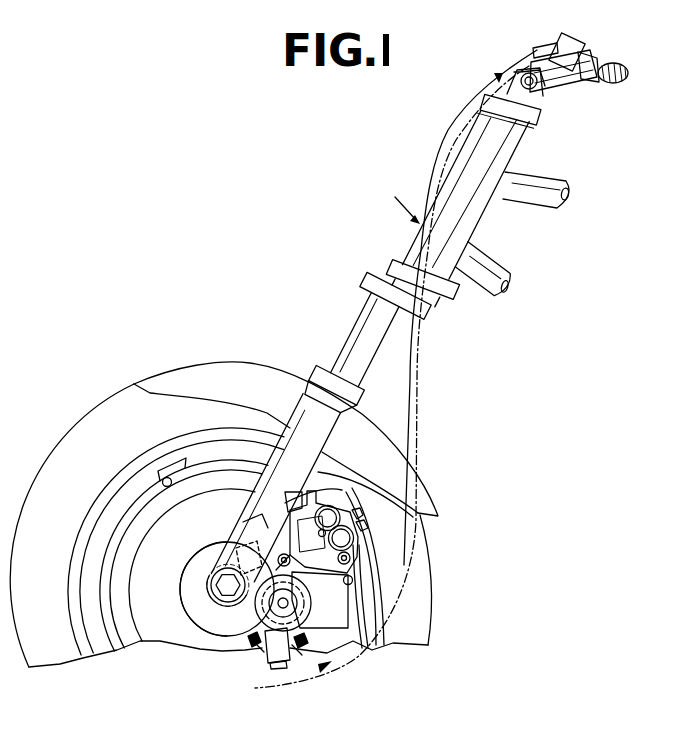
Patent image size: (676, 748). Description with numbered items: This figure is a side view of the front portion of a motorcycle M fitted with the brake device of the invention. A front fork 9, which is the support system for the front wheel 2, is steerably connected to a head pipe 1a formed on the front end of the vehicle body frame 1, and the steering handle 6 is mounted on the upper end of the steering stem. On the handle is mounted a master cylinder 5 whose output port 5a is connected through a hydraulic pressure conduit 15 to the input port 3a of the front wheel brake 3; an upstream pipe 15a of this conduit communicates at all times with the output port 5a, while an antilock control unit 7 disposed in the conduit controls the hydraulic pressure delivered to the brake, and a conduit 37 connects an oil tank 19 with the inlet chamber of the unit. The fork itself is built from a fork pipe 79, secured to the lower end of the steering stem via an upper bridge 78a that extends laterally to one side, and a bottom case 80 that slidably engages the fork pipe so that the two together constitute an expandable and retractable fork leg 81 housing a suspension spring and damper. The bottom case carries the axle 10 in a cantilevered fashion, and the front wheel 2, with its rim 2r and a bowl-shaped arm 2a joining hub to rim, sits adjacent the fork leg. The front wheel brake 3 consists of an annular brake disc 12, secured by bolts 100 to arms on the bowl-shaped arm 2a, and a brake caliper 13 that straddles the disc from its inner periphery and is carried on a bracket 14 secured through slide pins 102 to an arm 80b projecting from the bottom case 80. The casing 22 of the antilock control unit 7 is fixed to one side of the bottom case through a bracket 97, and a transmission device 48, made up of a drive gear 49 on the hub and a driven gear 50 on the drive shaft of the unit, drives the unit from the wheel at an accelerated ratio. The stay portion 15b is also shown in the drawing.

The vehicle body frame 1 is at (531, 169).
The head pipe 1a is at (483, 212).
The front wheel 2 is at (69, 447).
The bowl-shaped arm 2a is at (144, 632).
The rim 2r is at (137, 465).
The front wheel brake 3 is at (364, 513).
The input port 3a is at (368, 527).
The master cylinder 5 is at (549, 36).
The output port 5a is at (560, 77).
The steering handle 6 is at (607, 66).
The antilock control unit 7 is at (268, 641).
The front fork 9 is at (345, 326).
The axle 10 is at (226, 587).
The brake disc 12 is at (125, 576).
The brake caliper 13 is at (305, 505).
The bracket 14 is at (292, 504).
The hydraulic pressure conduit 15 is at (381, 603).
The upstream pipe 15a is at (417, 657).
The inner stay 15b is at (400, 685).
The oil tank 19 is at (568, 42).
The casing 22 is at (256, 646).
The conduit 37 is at (447, 128).
The transmission device 48 is at (203, 538).
The drive gear 49 is at (184, 596).
The driven gear 50 is at (228, 601).
The upper bridge 78a is at (373, 283).
The fork pipe 79 is at (340, 357).
The bottom case 80 is at (336, 331).
The arm 80b is at (279, 546).
The fork leg 81 is at (282, 454).
The bracket 97 is at (250, 516).
The bolts 100 is at (169, 488).
The slide pins 102 is at (346, 506).
The motorcycle M is at (399, 197).